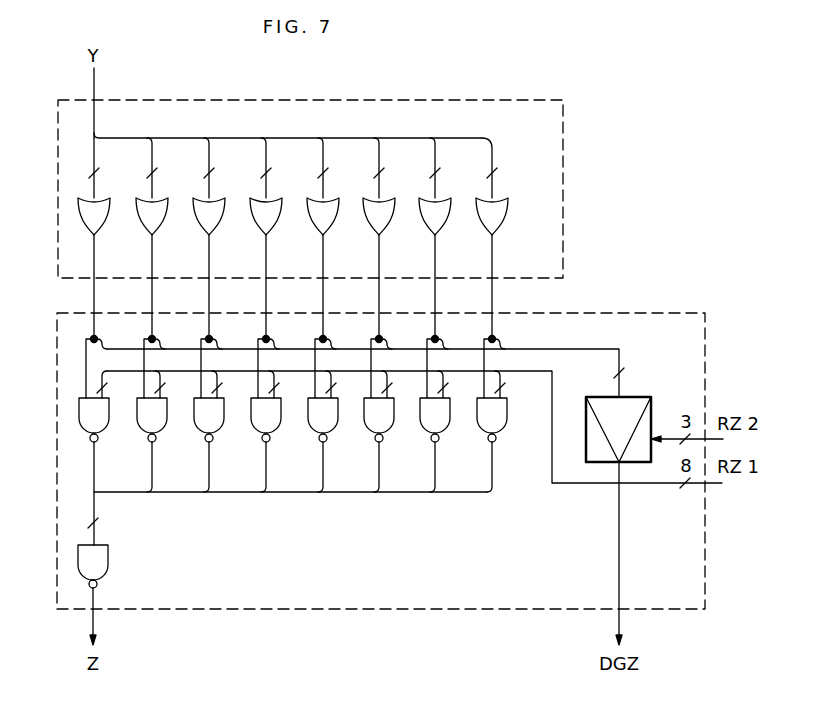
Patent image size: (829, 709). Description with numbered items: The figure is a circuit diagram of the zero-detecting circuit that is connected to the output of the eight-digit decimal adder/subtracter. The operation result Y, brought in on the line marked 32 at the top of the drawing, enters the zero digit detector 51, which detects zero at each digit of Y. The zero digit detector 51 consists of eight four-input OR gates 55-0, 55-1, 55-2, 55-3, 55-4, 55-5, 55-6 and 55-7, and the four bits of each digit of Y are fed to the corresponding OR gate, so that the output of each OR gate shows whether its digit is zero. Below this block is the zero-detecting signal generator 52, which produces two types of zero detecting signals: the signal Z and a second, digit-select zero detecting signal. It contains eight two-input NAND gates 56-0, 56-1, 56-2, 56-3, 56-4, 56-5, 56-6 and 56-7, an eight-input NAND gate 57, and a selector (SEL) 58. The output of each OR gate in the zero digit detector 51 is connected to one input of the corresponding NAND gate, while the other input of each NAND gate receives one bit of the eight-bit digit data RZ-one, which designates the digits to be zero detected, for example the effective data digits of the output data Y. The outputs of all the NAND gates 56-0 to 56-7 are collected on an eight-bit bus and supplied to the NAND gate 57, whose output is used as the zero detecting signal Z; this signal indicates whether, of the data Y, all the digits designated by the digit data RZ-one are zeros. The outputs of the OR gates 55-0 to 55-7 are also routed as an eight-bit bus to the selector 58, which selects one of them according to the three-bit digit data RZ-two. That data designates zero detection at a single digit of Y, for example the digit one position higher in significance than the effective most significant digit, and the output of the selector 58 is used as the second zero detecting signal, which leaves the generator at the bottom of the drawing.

The input data Y bus 32 is at (99, 82).
The zero digit detector 51 is at (530, 100).
The zero-detecting signal generator 52 is at (663, 313).
The 4-input OR gate 55-0 is at (104, 228).
The 4-input OR gate 55-1 is at (162, 228).
The 4-input OR gate 55-2 is at (219, 228).
The 4-input OR gate 55-3 is at (276, 228).
The 4-input OR gate 55-4 is at (333, 228).
The 4-input OR gate 55-5 is at (389, 228).
The 4-input OR gate 55-6 is at (445, 228).
The 4-input OR gate 55-7 is at (502, 228).
The 2-input NAND gate 56-0 is at (103, 436).
The 2-input NAND gate 56-1 is at (161, 436).
The 2-input NAND gate 56-2 is at (218, 436).
The 2-input NAND gate 56-3 is at (275, 436).
The 2-input NAND gate 56-4 is at (332, 436).
The 2-input NAND gate 56-5 is at (388, 436).
The 2-input NAND gate 56-6 is at (444, 436).
The 2-input NAND gate 56-7 is at (501, 436).
The 8-input NAND gate 57 is at (108, 563).
The selector (SEL) 58 is at (645, 397).